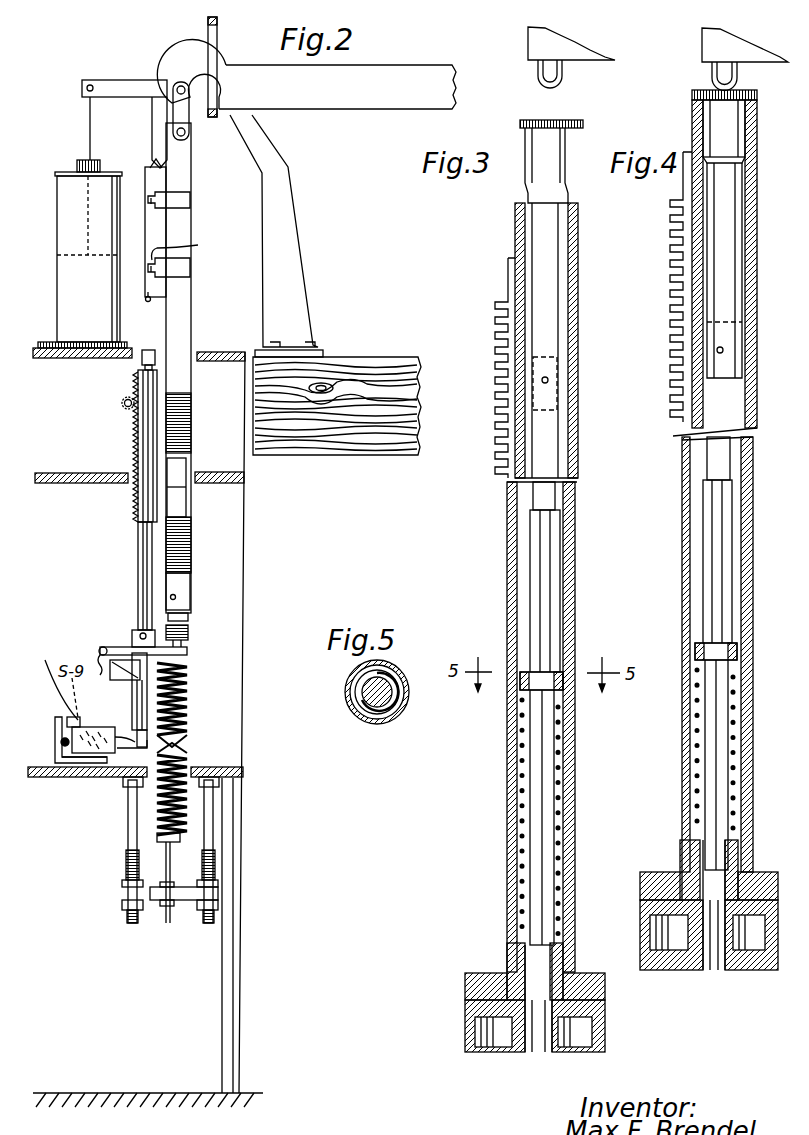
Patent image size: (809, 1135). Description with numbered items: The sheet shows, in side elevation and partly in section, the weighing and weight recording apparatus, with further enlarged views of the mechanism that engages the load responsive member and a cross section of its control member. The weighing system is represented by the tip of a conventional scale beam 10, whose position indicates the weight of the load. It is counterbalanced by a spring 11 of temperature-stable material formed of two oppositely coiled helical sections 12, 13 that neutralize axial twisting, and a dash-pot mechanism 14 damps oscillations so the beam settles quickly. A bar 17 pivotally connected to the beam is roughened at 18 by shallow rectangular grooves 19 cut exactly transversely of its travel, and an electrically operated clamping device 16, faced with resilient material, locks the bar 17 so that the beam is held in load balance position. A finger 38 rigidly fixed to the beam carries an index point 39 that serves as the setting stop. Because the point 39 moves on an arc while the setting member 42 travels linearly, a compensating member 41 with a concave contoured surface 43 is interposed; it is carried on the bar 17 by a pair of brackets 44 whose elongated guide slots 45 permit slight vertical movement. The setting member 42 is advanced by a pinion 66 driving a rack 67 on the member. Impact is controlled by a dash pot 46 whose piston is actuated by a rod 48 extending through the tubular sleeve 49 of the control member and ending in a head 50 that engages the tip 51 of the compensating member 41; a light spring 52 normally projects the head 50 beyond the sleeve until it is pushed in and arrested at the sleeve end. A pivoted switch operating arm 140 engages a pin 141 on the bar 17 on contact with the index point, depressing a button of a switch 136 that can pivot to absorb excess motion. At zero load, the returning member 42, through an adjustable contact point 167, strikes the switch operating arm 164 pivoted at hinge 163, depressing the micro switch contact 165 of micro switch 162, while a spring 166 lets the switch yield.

In FIG. 2, the beam 10 is at (390, 110).
In FIG. 2, the spring 11 is at (190, 692).
In FIG. 2, the helical section 12 is at (190, 727).
In FIG. 2, the helical section 13 is at (187, 763).
In FIG. 2, the dash-pot mechanism 14 is at (56, 193).
In FIG. 2, the clamping device 16 is at (178, 472).
In FIG. 2, the bar 17 is at (188, 328).
In FIG. 2, the roughened portion 18 is at (189, 542).
In FIG. 2, the grooves 19 is at (186, 567).
In FIG. 2, the finger 38 is at (153, 132).
In FIG. 2, the point 39 is at (170, 163).
In FIG. 2, the compensating member 41 is at (155, 230).
In FIG. 3, the compensating member 41 is at (528, 50).
In FIG. 4, the compensating member 41 is at (703, 48).
In FIG. 2, the setting member 42 is at (133, 502).
In FIG. 3, the setting member 42 is at (578, 265).
In FIG. 4, the setting member 42 is at (752, 277).
In FIG. 2, the surface 43 is at (152, 166).
In FIG. 2, the brackets 44 is at (190, 198).
In FIG. 2, the guide slots 45 is at (186, 248).
In FIG. 2, the dash pot 46 is at (132, 635).
In FIG. 3, the dash pot 46 is at (463, 1027).
In FIG. 4, the dash pot 46 is at (640, 932).
In FIG. 3, the rod 48 is at (550, 545).
In FIG. 4, the rod 48 is at (722, 538).
In FIG. 5, the rod 48 is at (388, 690).
In FIG. 3, the tubular sleeve 49 is at (575, 590).
In FIG. 4, the tubular sleeve 49 is at (753, 573).
In FIG. 5, the tubular sleeve 49 is at (377, 722).
In FIG. 2, the head 50 is at (143, 360).
In FIG. 3, the head 50 is at (532, 173).
In FIG. 4, the head 50 is at (757, 130).
In FIG. 2, the tip 51 is at (147, 301).
In FIG. 3, the tip 51 is at (565, 78).
In FIG. 4, the tip 51 is at (745, 80).
In FIG. 3, the light spring 52 is at (558, 773).
In FIG. 4, the light spring 52 is at (735, 772).
In FIG. 2, the pinion 66 is at (125, 412).
In FIG. 2, the rack 67 is at (133, 452).
In FIG. 3, the rack 67 is at (498, 425).
In FIG. 4, the rack 67 is at (688, 432).
In FIG. 2, the switch 136 is at (127, 672).
In FIG. 2, the switch operating arm 140 is at (128, 652).
In FIG. 2, the pin 141 is at (178, 597).
In FIG. 2, the micro switch 162 is at (88, 745).
In FIG. 2, the hinge 163 is at (62, 742).
In FIG. 2, the switch operating arm 164 is at (88, 727).
In FIG. 2, the micro switch contact 165 is at (110, 750).
In FIG. 2, the spring 166 is at (53, 680).
In FIG. 2, the adjustable contact point 167 is at (140, 738).